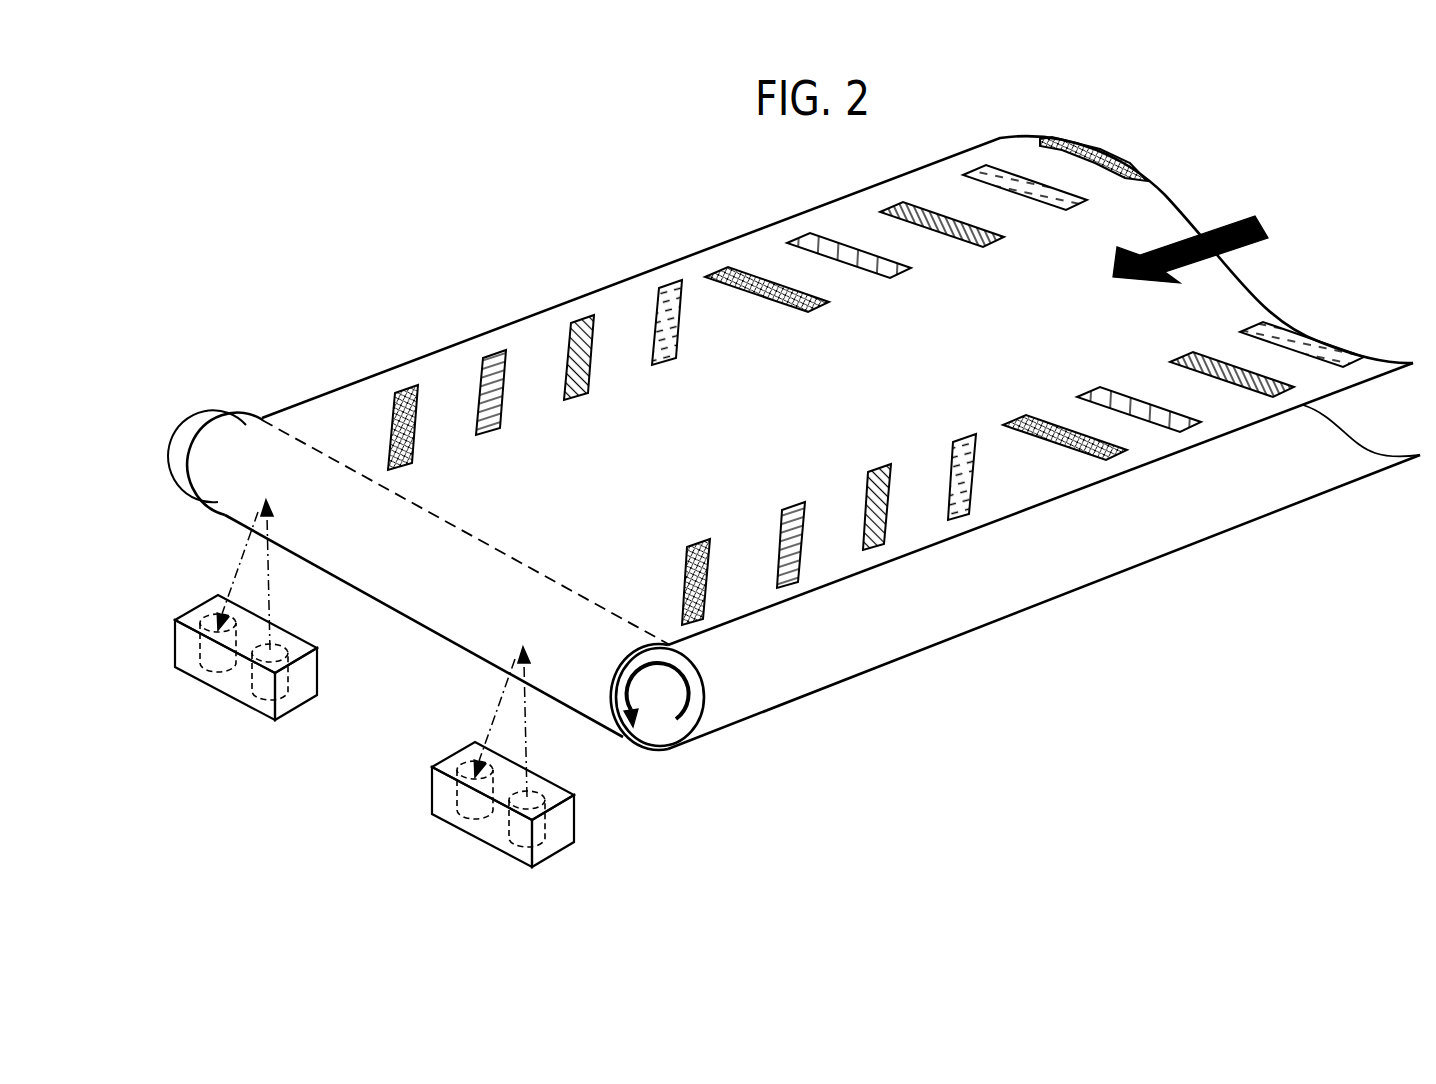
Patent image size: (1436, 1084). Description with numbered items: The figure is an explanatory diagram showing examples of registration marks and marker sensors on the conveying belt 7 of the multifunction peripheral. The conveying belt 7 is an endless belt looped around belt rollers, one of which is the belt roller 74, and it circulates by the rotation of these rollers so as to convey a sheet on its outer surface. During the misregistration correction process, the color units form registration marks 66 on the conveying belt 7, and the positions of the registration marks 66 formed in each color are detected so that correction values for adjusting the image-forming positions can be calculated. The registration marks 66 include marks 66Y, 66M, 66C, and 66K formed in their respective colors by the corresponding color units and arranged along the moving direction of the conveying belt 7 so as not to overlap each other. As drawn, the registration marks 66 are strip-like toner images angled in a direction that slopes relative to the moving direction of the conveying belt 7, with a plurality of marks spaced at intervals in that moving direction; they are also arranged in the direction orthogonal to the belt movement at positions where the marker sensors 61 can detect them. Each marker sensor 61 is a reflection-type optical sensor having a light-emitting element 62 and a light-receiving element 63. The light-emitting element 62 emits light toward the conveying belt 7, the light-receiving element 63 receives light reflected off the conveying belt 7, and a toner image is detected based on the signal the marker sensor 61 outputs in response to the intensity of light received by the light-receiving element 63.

The conveying belt 7 is at (536, 320).
The belt roller 74 is at (657, 735).
The registration marks 66 is at (1085, 645).
The mark 66K is at (403, 388).
The mark 66C is at (800, 565).
The mark 66M is at (883, 527).
The mark 66Y is at (963, 490).
The marker sensor 61 is at (282, 705).
The light-emitting element 62 is at (300, 650).
The light-receiving element 63 is at (195, 603).